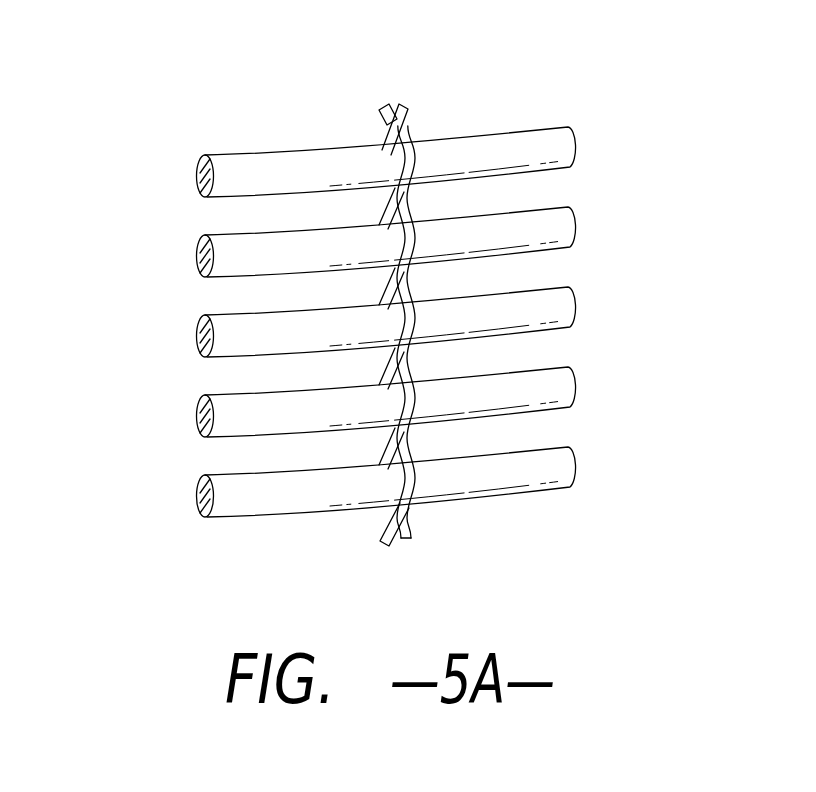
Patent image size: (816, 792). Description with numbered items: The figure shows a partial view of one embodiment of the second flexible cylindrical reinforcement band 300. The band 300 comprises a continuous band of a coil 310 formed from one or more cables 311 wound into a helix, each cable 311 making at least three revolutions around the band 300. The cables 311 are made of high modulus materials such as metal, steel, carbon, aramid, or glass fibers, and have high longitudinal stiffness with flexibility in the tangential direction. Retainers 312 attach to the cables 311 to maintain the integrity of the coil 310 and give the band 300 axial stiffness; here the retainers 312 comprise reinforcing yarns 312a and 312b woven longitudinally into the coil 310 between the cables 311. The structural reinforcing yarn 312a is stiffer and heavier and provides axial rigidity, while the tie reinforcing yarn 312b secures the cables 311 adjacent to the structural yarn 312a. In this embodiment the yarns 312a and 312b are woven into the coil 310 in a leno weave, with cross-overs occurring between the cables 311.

The second flexible cylindrical reinforcement band 300 is at (633, 140).
The coil 310 is at (100, 150).
The cable 311 is at (197, 183).
The retainer 312 is at (388, 104).
The structural reinforcing yarn 312a is at (386, 516).
The tie reinforcing yarn 312b is at (420, 517).